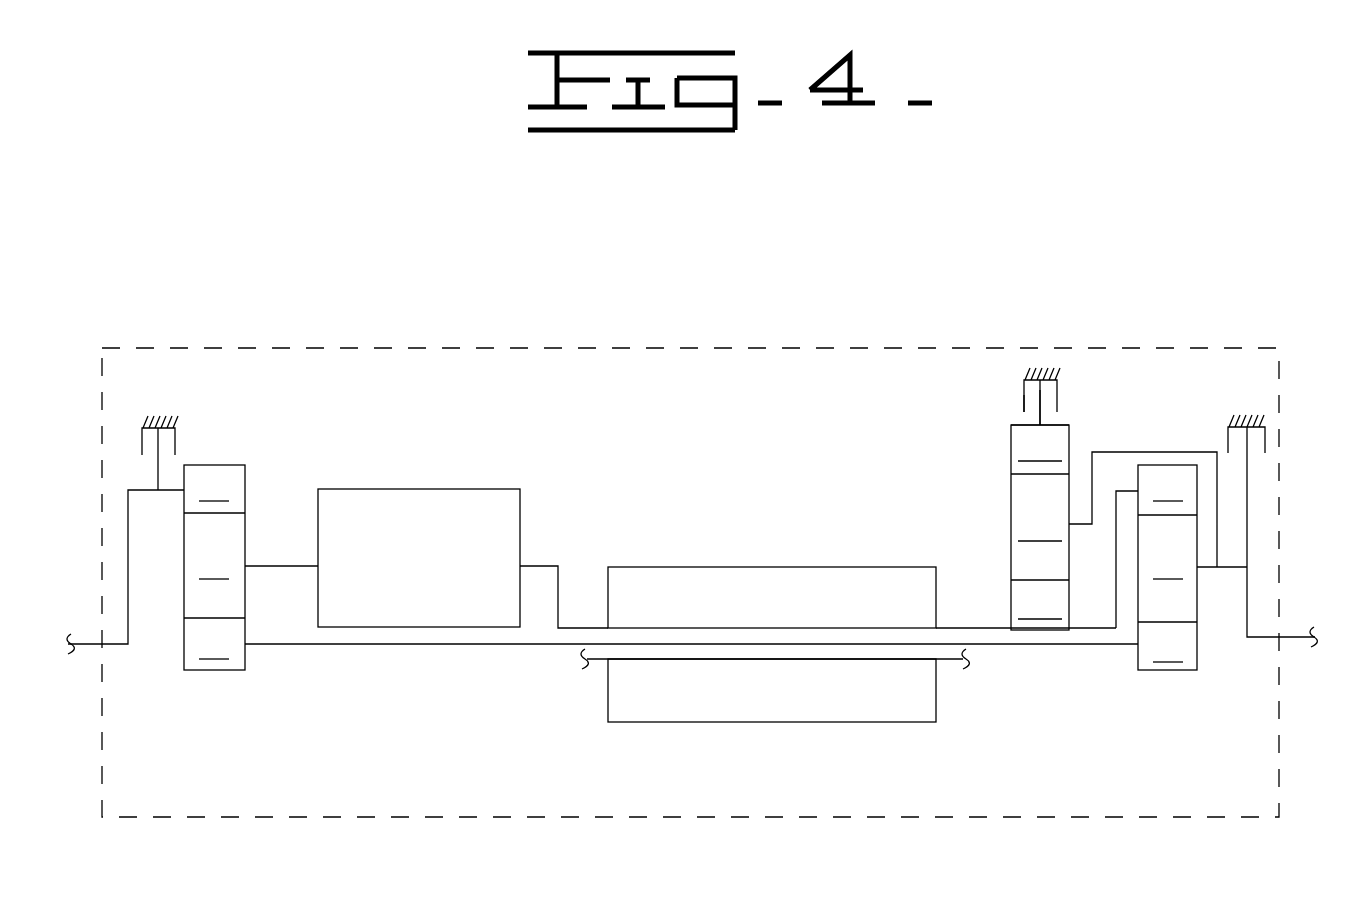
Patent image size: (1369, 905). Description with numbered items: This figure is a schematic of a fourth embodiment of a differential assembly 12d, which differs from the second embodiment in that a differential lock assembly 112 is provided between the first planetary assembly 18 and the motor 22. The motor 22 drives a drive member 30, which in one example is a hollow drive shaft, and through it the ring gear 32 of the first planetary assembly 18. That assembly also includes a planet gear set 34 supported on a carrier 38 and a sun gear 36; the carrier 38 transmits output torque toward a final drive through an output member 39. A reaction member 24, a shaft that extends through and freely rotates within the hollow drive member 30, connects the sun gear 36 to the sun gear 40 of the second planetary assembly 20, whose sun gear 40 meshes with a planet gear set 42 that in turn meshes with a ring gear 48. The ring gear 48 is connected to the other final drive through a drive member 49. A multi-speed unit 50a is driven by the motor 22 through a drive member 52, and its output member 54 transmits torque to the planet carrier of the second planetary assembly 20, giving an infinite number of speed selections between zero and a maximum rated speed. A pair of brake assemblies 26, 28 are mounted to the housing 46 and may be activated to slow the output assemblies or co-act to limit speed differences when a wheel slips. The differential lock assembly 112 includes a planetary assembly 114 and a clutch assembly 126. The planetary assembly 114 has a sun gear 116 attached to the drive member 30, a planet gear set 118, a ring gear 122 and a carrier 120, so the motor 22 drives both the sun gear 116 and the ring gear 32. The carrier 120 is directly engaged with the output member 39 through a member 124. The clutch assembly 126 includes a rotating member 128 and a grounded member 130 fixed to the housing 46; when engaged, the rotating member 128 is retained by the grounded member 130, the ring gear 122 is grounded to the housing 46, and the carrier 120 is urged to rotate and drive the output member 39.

The differential assembly 12d is at (730, 338).
The first planetary assembly 18 is at (1194, 611).
The second planetary assembly 20 is at (233, 541).
The motor 22 is at (703, 567).
The reaction member 24 is at (425, 645).
The brake assembly 26 is at (1284, 442).
The brake assembly 28 is at (125, 429).
The drive member 30 is at (972, 628).
The ring gear 32 is at (1168, 488).
The planet gear set 34 is at (1168, 566).
The sun gear 36 is at (1168, 649).
The carrier 38 is at (1198, 568).
The output member 39 is at (1247, 592).
The sun gear 40 is at (214, 646).
The planet gear set 42 is at (214, 566).
The housing 46 is at (1035, 370).
The ring gear 48 is at (214, 488).
The drive member 49 is at (127, 558).
The multi-speed unit 50a is at (402, 480).
The drive member 52 is at (558, 592).
The output member 54 is at (298, 566).
The differential lock assembly 112 is at (1030, 435).
The planetary assembly 114 is at (1092, 410).
The sun gear 116 is at (1040, 606).
The planet gear set 118 is at (1040, 528).
The carrier 120 is at (1069, 524).
The ring gear 122 is at (1040, 448).
The member 124 is at (1172, 449).
The clutch assembly 126 is at (993, 416).
The rotating member 128 is at (1047, 420).
The grounded member 130 is at (1023, 398).